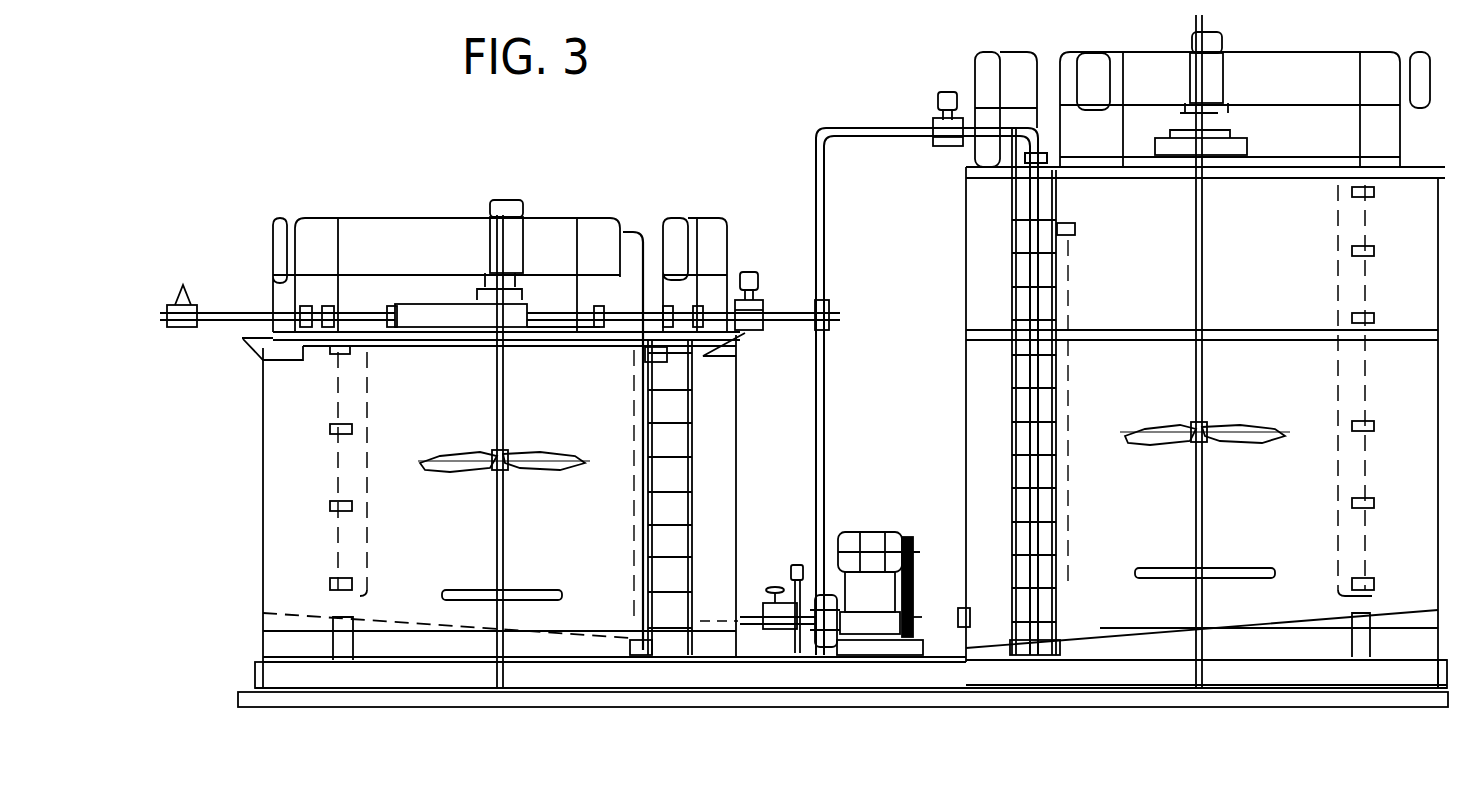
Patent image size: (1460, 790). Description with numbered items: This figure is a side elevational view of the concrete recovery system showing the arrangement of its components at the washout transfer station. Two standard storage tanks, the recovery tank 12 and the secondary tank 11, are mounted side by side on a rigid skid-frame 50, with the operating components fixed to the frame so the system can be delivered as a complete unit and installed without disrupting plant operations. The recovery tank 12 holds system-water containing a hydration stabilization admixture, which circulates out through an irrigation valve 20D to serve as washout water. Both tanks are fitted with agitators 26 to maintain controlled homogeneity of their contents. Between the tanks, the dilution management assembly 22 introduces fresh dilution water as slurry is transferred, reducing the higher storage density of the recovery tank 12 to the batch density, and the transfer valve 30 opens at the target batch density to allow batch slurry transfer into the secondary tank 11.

The secondary tank 11 is at (962, 266).
The recovery tank 12 is at (262, 371).
The irrigation valve 20D is at (758, 292).
The dilution management assembly 22 is at (872, 520).
The agitator 26 is at (1210, 425).
The transfer valve 30 is at (937, 147).
The skid-frame 50 is at (427, 698).